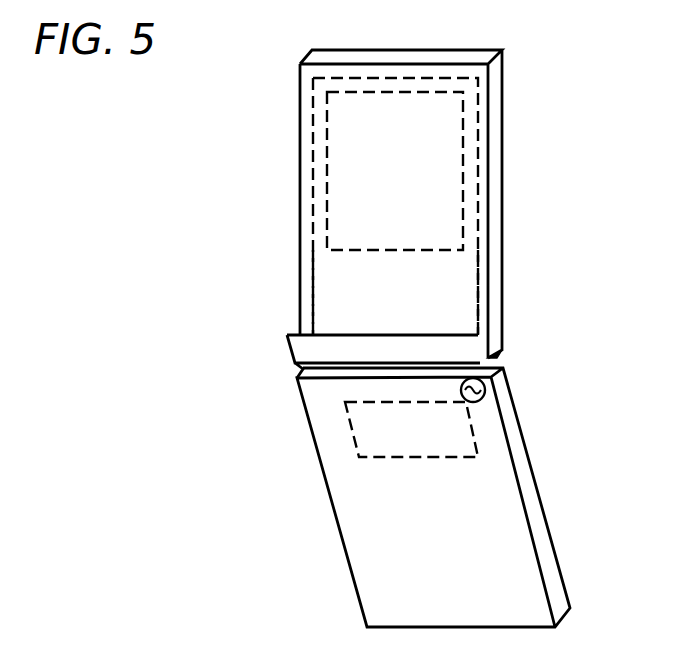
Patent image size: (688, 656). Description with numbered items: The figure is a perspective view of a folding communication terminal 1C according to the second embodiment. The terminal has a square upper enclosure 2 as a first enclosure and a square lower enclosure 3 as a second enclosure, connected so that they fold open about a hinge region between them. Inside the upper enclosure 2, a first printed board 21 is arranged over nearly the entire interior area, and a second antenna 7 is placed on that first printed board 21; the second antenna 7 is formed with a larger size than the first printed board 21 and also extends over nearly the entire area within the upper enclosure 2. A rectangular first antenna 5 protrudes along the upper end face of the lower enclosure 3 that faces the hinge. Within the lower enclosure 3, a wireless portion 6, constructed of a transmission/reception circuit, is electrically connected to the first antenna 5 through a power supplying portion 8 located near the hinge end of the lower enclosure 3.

The communication terminal 1C is at (276, 116).
The upper enclosure 2 is at (502, 118).
The first printed board 21 is at (475, 198).
The second antenna 7 is at (472, 288).
The first antenna 5 is at (468, 348).
The lower enclosure 3 is at (502, 556).
The power supplying portion 8 is at (461, 393).
The wireless portion 6 is at (478, 450).